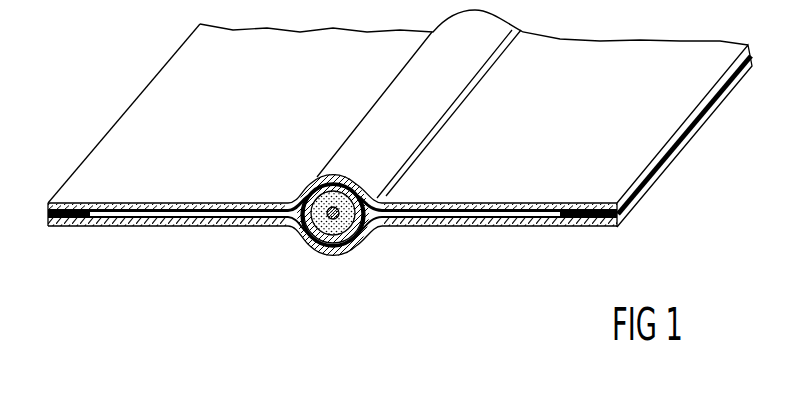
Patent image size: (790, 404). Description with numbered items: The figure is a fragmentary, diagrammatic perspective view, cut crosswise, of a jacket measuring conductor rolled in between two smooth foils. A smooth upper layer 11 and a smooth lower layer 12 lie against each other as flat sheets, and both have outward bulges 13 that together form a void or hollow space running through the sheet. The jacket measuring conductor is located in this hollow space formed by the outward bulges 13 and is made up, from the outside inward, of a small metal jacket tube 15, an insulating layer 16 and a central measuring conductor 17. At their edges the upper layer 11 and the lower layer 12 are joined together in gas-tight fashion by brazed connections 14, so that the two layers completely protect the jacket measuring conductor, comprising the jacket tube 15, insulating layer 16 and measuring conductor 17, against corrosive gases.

The upper layer 11 is at (515, 203).
The lower layer 12 is at (516, 228).
The outward bulges 13 is at (343, 256).
The brazed connections 14 is at (63, 226).
The small metal jacket tube 15 is at (297, 248).
The insulating layer 16 is at (325, 255).
The measuring conductor 17 is at (320, 178).